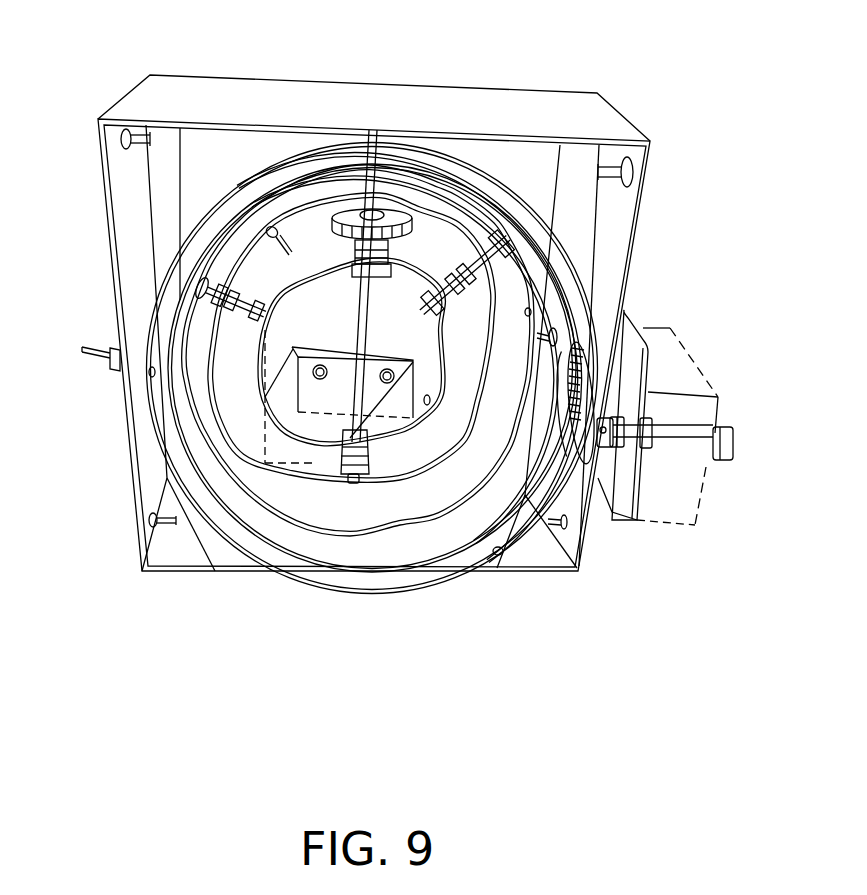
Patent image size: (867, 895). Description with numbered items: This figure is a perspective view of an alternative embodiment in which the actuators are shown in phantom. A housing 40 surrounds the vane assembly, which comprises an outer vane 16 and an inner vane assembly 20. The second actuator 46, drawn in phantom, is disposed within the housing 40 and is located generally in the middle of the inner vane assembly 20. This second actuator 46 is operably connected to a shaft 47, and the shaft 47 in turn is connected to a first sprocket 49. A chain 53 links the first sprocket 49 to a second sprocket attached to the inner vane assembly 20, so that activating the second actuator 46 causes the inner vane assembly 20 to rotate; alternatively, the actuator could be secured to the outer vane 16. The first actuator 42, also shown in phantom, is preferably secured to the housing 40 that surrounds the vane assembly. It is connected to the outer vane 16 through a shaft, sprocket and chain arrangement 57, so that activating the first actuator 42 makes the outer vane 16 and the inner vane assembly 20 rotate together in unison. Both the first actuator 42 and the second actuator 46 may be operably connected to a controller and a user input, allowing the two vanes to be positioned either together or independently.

The housing 40 is at (550, 107).
The outer vane 16 is at (167, 438).
The inner vane assembly 20 is at (237, 502).
The second actuator 46 is at (294, 467).
The shaft 47 is at (300, 344).
The first sprocket 49 is at (380, 215).
The chain 53 is at (337, 203).
The shaft, sprocket and chain arrangement 57 is at (595, 345).
The first actuator 42 is at (680, 370).